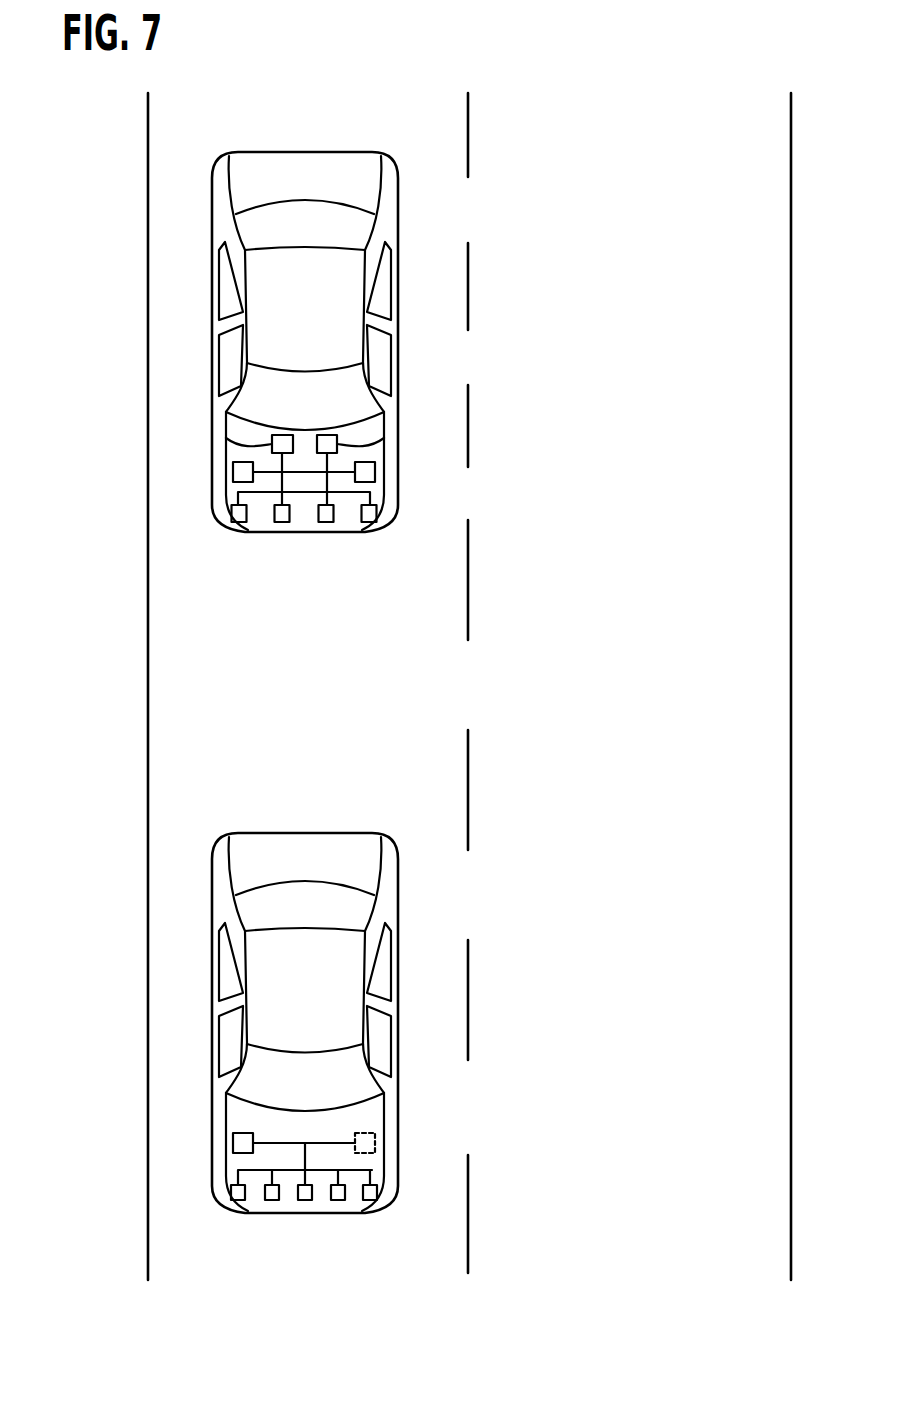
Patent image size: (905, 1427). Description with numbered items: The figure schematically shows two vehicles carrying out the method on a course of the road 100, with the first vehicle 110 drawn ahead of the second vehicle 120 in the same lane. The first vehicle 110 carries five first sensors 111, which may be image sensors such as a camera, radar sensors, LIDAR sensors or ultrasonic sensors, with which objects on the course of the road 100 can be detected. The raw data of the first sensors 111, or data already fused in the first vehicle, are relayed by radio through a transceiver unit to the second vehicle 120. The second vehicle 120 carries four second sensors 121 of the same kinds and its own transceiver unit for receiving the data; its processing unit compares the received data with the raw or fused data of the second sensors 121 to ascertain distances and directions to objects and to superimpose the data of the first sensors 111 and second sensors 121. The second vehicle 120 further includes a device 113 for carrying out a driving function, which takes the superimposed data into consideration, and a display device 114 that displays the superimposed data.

The course of the road 100 is at (178, 128).
The first vehicle 110 is at (399, 915).
The first sensors 111 is at (398, 1245).
The device for carrying out a driving function 113 is at (226, 437).
The display device 114 is at (384, 437).
The second vehicle 120 is at (399, 259).
The second sensors 121 is at (387, 572).